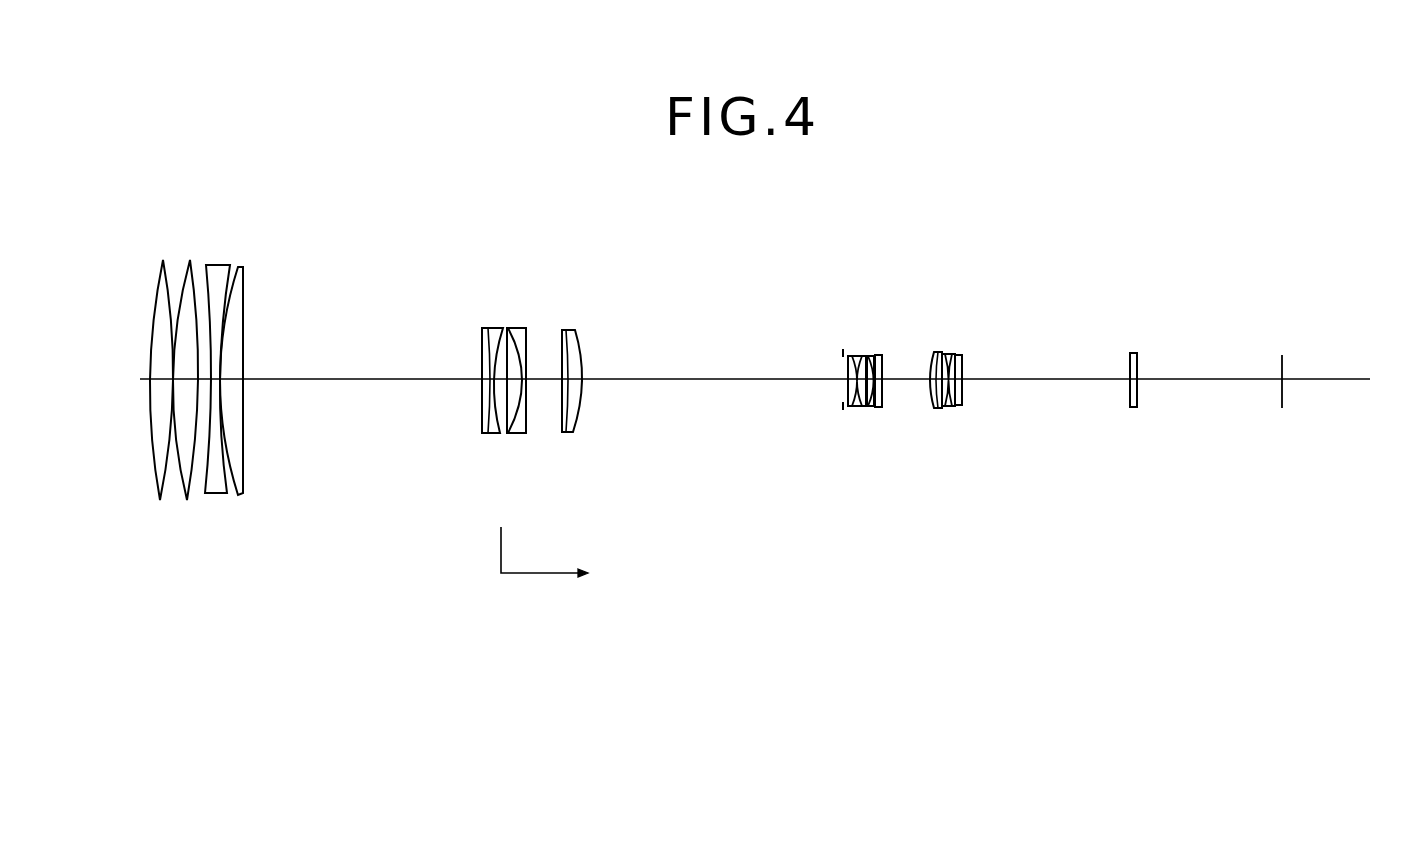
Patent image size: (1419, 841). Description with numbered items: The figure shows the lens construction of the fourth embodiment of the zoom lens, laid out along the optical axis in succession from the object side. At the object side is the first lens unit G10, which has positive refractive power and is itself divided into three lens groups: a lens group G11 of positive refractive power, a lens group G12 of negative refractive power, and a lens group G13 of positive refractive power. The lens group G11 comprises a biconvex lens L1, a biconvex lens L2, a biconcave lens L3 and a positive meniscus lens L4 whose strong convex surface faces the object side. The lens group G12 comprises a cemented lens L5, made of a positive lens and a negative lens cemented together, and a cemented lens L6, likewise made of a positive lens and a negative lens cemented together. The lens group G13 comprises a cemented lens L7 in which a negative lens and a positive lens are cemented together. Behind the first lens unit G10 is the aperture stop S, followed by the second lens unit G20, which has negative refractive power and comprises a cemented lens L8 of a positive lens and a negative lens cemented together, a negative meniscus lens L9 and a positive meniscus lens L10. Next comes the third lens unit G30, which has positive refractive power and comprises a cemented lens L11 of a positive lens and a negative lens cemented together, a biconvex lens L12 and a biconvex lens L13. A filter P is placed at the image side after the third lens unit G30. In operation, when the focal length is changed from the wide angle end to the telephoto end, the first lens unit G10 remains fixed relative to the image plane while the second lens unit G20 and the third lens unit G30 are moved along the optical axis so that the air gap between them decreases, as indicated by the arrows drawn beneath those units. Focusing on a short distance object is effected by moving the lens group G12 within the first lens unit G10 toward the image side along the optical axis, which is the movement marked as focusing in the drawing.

The biconvex lens L1 is at (165, 258).
The biconvex lens L2 is at (190, 258).
The biconcave lens L3 is at (220, 263).
The positive meniscus lens L4 is at (242, 267).
The cemented lens L5 is at (502, 307).
The cemented lens L6 is at (535, 307).
The cemented lens L7 is at (587, 307).
The cemented lens L8 is at (863, 308).
The negative meniscus lens L9 is at (868, 353).
The positive meniscus lens L10 is at (878, 355).
The cemented lens L11 is at (950, 308).
The biconvex lens L12 is at (948, 353).
The biconvex lens L13 is at (958, 353).
The aperture stop S is at (843, 355).
The filter P is at (1132, 352).
The first lens unit G10 is at (417, 448).
The lens group G11 is at (220, 355).
The lens group G12 is at (496, 413).
The lens group G13 is at (569, 413).
The second lens unit G20 is at (859, 466).
The third lens unit G30 is at (972, 478).